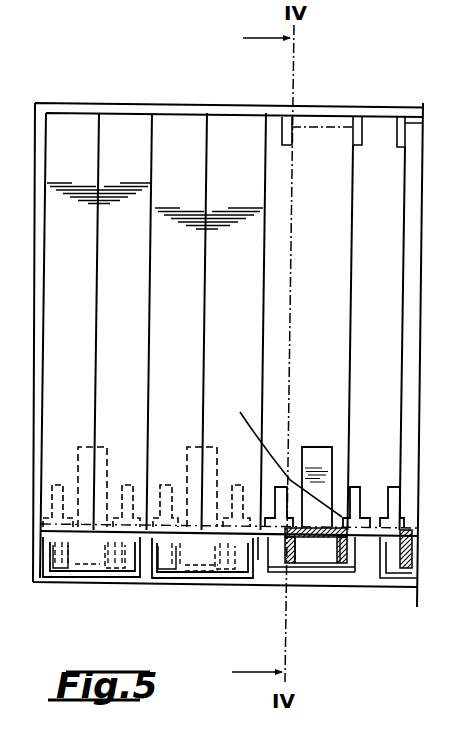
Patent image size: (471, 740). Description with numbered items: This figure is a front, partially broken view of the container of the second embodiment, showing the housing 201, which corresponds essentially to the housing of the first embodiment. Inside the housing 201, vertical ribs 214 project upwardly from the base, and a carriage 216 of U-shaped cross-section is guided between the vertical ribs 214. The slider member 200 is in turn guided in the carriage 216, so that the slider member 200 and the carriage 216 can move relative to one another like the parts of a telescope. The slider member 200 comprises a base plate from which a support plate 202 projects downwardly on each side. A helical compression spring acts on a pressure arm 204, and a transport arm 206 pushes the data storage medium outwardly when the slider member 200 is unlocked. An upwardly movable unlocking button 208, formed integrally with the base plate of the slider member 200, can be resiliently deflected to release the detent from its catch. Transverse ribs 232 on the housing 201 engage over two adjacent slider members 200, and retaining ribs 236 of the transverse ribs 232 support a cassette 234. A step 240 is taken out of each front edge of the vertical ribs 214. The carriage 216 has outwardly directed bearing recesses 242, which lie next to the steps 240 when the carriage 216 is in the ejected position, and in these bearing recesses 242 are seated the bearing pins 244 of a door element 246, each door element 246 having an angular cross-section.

The housing 201 is at (263, 104).
The cassette 234 is at (355, 167).
The door element 246 is at (248, 284).
The transport arm 206 is at (102, 447).
The retaining ribs 236 is at (163, 483).
The transverse ribs 232 is at (282, 452).
The vertical ribs 214 is at (258, 560).
The step 240 is at (380, 533).
The bearing recesses 242 is at (53, 580).
The bearing pins 244 is at (160, 601).
The unlocking button 208 is at (165, 578).
The pressure arm 204 is at (218, 578).
The slider member 200 is at (318, 540).
The carriage 216 is at (345, 566).
The support plate 202 is at (357, 562).